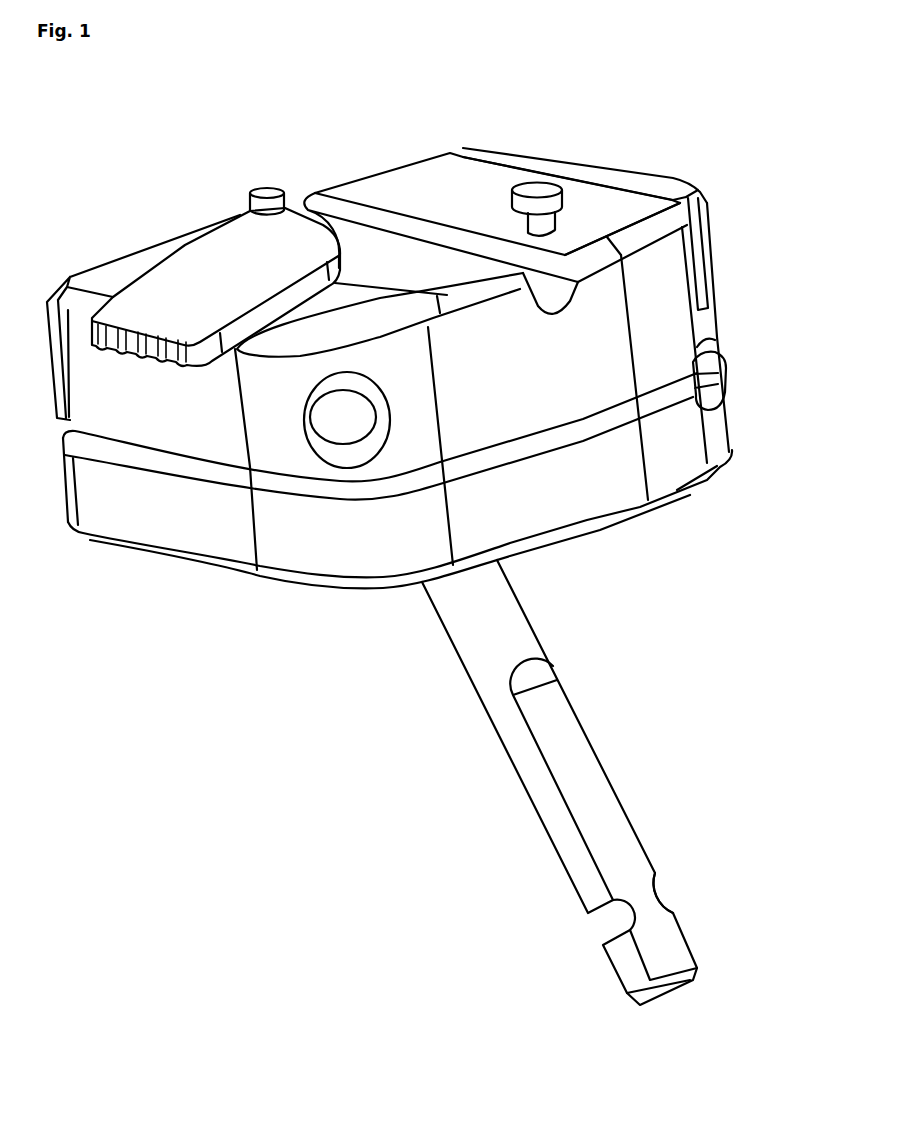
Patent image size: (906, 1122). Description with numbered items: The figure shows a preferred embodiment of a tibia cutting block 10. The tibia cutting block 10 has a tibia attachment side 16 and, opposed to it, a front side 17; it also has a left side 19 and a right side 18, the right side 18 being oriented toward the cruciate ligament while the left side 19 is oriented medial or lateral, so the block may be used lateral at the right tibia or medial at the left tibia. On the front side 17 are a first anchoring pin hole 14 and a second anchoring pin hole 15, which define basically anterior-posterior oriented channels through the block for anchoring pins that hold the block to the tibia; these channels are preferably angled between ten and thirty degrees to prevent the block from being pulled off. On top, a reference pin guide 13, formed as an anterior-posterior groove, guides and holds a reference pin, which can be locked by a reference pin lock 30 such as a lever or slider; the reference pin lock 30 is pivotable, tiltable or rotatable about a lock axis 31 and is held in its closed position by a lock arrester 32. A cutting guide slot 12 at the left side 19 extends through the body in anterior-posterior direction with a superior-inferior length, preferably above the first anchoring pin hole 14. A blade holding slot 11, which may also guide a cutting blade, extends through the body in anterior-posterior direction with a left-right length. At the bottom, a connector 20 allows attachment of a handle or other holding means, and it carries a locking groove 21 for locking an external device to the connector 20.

The tibia cutting block 10 is at (628, 146).
The blade holding slot 11 is at (380, 482).
The cutting guide slot 12 is at (690, 208).
The reference pin guide 13 is at (378, 223).
The first anchoring pin hole 14 is at (703, 389).
The second anchoring pin hole 15 is at (338, 413).
The tibia attachment side 16 is at (116, 246).
The front side 17 is at (543, 400).
The right side 18 is at (160, 420).
The left side 19 is at (722, 248).
The connector 20 is at (612, 768).
The locking groove 21 is at (661, 893).
The reference pin lock 30 is at (203, 262).
The lock axis 31 is at (266, 192).
The lock arrester 32 is at (540, 190).